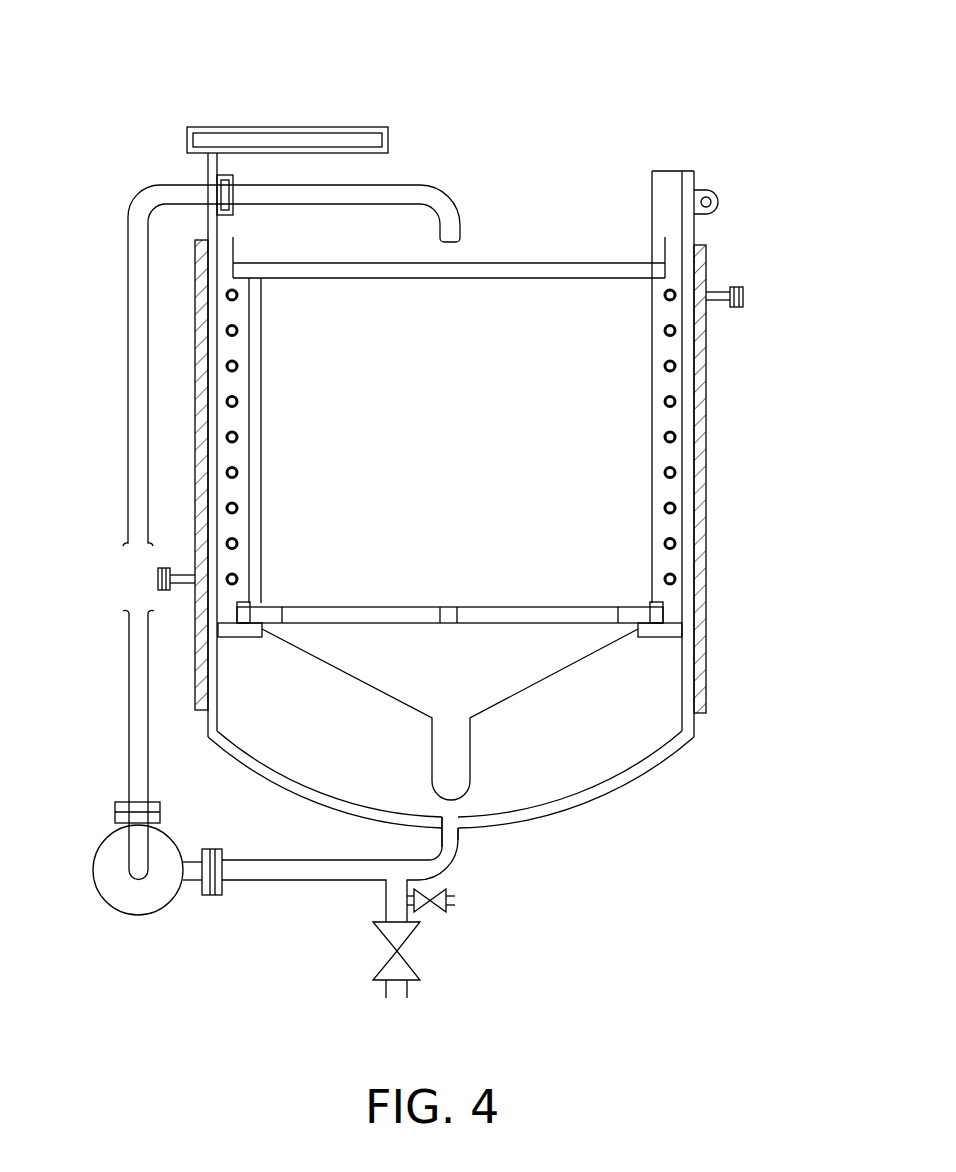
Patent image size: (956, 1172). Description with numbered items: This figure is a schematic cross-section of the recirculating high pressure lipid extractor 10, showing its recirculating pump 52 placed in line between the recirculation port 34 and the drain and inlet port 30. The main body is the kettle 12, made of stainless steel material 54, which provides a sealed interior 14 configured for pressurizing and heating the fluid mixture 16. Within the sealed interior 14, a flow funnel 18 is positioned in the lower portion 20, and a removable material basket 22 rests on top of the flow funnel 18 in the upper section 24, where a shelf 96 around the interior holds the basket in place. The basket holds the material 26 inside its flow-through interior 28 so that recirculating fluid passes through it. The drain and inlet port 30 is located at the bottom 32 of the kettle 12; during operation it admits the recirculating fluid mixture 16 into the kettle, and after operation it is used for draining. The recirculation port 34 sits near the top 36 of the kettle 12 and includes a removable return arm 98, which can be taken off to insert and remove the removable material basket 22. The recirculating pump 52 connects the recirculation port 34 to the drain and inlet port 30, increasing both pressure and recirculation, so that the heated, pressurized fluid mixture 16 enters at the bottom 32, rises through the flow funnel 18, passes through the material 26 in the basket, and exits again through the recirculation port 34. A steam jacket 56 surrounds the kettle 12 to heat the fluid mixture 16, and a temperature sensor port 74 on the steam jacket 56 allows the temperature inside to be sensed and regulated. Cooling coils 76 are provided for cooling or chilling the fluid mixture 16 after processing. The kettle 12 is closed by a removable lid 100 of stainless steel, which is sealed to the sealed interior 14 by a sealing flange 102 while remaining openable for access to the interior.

The recirculating high pressure lipid extractor 10 is at (560, 112).
The kettle 12 is at (741, 363).
The sealed interior 14 is at (616, 492).
The fluid mixture 16 is at (604, 310).
The flow funnel 18 is at (495, 688).
The lower portion 20 is at (722, 645).
The removable material basket 22 is at (257, 383).
The upper section 24 is at (94, 340).
The material 26 is at (473, 462).
The flow-through interior 28 is at (271, 521).
The drain and inlet port 30 is at (455, 835).
The bottom 32 is at (428, 843).
The recirculation port 34 is at (168, 182).
The top 36 is at (118, 177).
The recirculating pump 52 is at (127, 892).
The stainless steel material 54 is at (710, 405).
The steam jacket 56 is at (672, 597).
The temperature sensor port 74 is at (158, 585).
The cooling coils 76 is at (695, 448).
The shelf 96 is at (245, 640).
The removable return arm 98 is at (402, 185).
The removable lid 100 is at (330, 127).
The sealing flange 102 is at (168, 136).